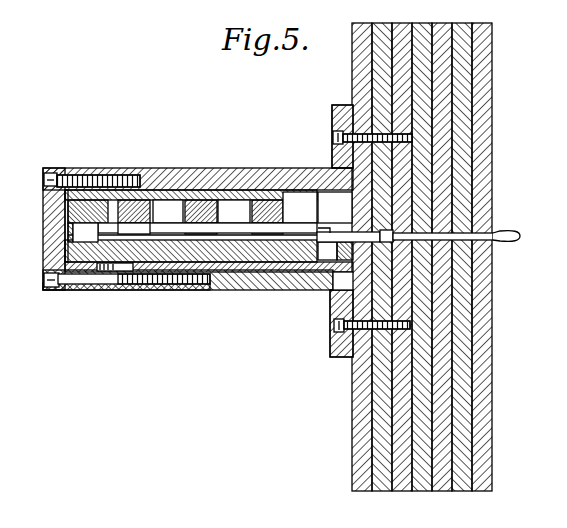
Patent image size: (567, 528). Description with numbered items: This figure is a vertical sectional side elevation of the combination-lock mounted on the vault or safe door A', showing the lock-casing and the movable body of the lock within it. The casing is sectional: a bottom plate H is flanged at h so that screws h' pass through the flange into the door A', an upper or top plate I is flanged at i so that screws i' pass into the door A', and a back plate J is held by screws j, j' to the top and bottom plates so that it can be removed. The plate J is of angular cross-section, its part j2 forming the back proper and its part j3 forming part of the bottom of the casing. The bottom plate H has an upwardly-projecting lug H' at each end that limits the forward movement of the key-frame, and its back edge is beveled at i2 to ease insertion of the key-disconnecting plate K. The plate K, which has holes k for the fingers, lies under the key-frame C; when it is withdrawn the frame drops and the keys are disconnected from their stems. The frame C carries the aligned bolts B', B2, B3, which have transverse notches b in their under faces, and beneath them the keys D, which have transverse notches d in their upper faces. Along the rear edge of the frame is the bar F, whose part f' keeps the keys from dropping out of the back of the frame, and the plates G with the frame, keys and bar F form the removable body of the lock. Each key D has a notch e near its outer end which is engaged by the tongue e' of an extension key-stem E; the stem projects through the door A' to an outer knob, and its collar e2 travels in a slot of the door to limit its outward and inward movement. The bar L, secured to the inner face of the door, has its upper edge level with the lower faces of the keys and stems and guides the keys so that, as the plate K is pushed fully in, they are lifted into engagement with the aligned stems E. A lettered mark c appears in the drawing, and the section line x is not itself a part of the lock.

The vault or safe door A' is at (435, 257).
The flange i is at (332, 136).
The screws i' is at (361, 135).
The flange h is at (332, 325).
The screws h' is at (359, 323).
The casing A is at (198, 219).
The plates G is at (176, 174).
The screw j is at (57, 165).
The back plate J is at (60, 260).
The screw j' is at (127, 294).
The top plate I is at (267, 173).
The bottom plate H is at (209, 288).
The key-disconnecting plate K is at (296, 272).
The holes k is at (341, 280).
The bar F is at (62, 214).
The part of back plate j2 is at (62, 208).
The part of bar F f' is at (40, 235).
The gap c is at (125, 211).
The bolt B3 is at (168, 211).
The transverse notches b is at (209, 217).
The bolt B2 is at (234, 211).
The bolt B' is at (267, 217).
The frame C is at (299, 207).
The lug H' is at (335, 207).
The keys D is at (192, 230).
The transverse notches d is at (85, 232).
The lining x is at (160, 252).
The bar L is at (335, 251).
The key-stem E is at (520, 236).
The notch e is at (303, 238).
The tongue e' is at (325, 232).
The collar e2 is at (388, 242).
The part of back plate j3 is at (112, 289).
The bevel i2 is at (136, 290).